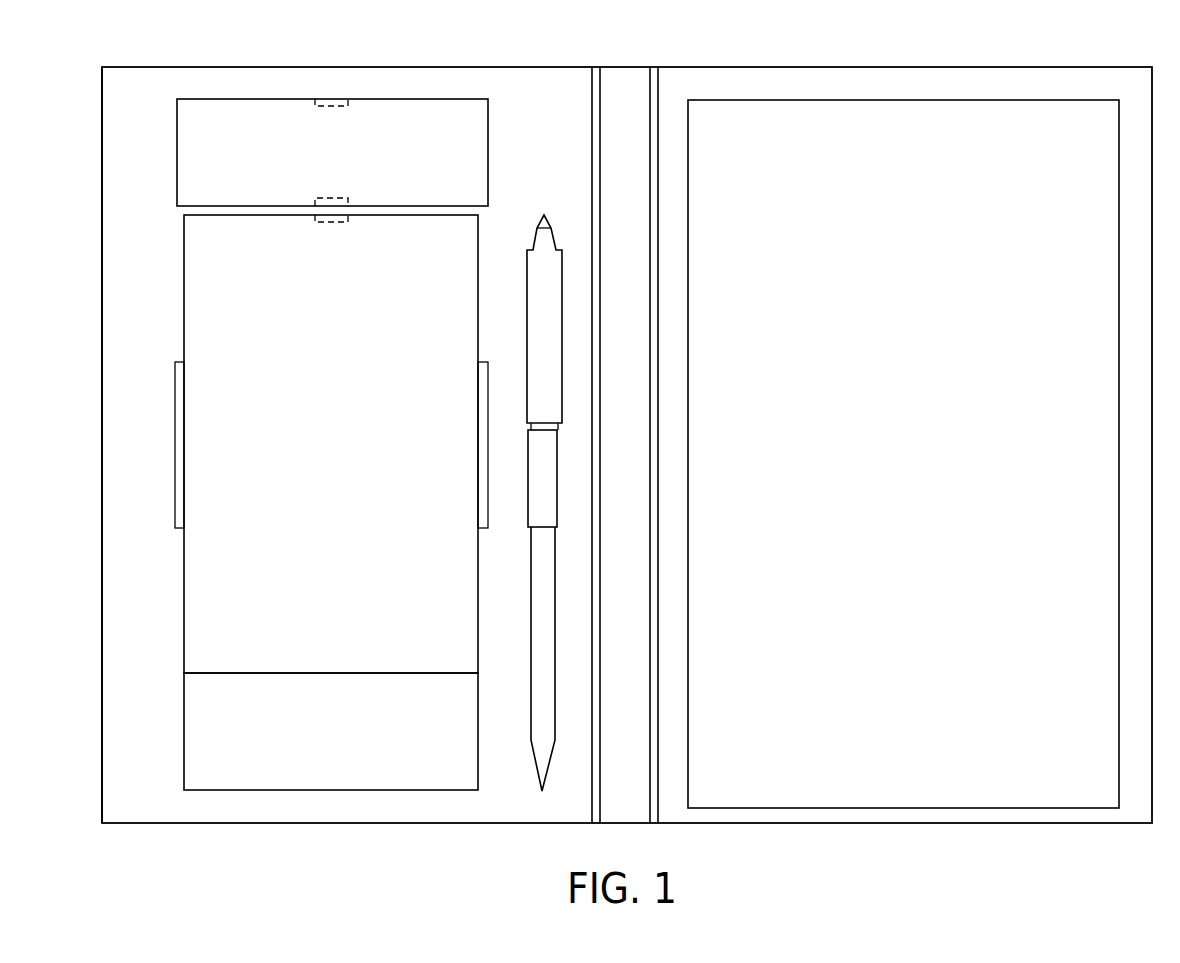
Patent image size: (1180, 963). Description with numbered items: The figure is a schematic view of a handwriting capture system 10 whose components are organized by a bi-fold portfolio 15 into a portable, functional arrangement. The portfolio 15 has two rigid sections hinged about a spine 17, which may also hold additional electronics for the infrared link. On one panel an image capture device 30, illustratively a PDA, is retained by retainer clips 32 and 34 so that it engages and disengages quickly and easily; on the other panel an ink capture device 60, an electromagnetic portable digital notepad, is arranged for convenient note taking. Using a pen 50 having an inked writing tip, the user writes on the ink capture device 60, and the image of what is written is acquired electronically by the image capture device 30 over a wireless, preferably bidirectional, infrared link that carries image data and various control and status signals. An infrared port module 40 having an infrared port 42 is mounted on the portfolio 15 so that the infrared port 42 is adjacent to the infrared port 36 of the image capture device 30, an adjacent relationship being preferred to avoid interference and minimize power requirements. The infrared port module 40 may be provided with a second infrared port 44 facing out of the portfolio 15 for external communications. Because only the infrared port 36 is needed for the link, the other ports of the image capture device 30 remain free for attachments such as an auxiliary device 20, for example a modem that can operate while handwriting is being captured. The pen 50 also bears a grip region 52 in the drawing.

The handwriting capture system 10 is at (96, 96).
The portfolio 15 is at (122, 445).
The spine 17 is at (614, 67).
The auxiliary device 20 is at (331, 731).
The image capture device 30 is at (331, 444).
The retainer clip 32 is at (176, 362).
The retainer clip 34 is at (486, 530).
The infrared port 36 is at (350, 218).
The infrared port module 40 is at (332, 152).
The infrared port 42 is at (316, 203).
The second infrared port 44 is at (350, 102).
The pen 50 is at (543, 214).
The stylus grip 52 is at (542, 478).
The ink capture device 60 is at (903, 454).